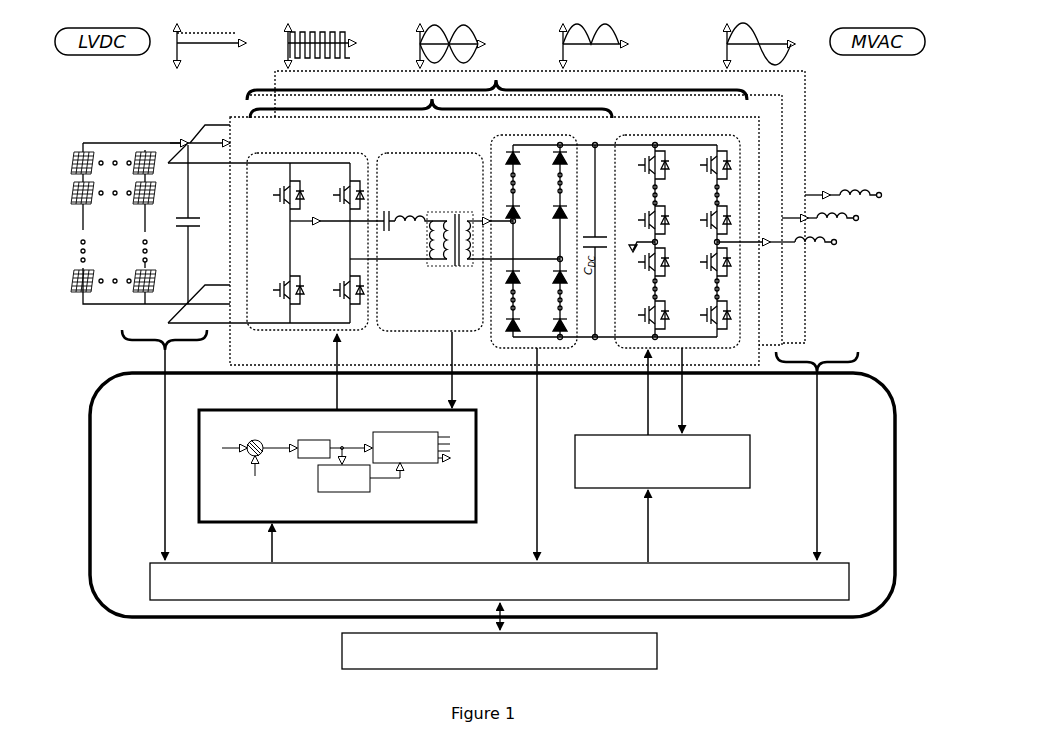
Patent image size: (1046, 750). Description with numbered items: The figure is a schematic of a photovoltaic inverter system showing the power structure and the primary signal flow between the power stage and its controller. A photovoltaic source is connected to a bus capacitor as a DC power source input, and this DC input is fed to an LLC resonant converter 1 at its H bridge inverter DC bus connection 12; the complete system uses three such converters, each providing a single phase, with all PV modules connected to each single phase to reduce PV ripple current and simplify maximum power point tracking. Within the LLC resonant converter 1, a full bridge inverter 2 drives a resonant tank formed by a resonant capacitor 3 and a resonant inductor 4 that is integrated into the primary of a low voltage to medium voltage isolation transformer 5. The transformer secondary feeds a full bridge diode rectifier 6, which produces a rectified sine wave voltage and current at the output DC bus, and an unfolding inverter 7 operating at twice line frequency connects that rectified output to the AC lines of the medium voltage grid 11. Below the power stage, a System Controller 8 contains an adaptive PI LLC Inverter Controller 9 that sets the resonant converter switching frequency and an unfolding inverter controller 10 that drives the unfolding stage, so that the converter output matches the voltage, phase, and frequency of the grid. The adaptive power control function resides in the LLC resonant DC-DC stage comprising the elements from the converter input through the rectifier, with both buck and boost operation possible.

The LLC resonant converter 1 is at (499, 80).
The full bridge inverter 2 is at (288, 157).
The resonant capacitor 3 is at (393, 197).
The resonant inductor 4 is at (423, 197).
The isolation transformer 5 is at (456, 197).
The full bridge diode rectifier 6 is at (495, 142).
The unfolding inverter 7 is at (673, 135).
The System Controller 8 is at (88, 563).
The adaptive PI LLC Inverter Controller 9 is at (479, 484).
The unfolding inverter controller 10 is at (752, 472).
The medium voltage grid 11 is at (430, 98).
The H bridge inverter DC bus connection 12 is at (211, 161).